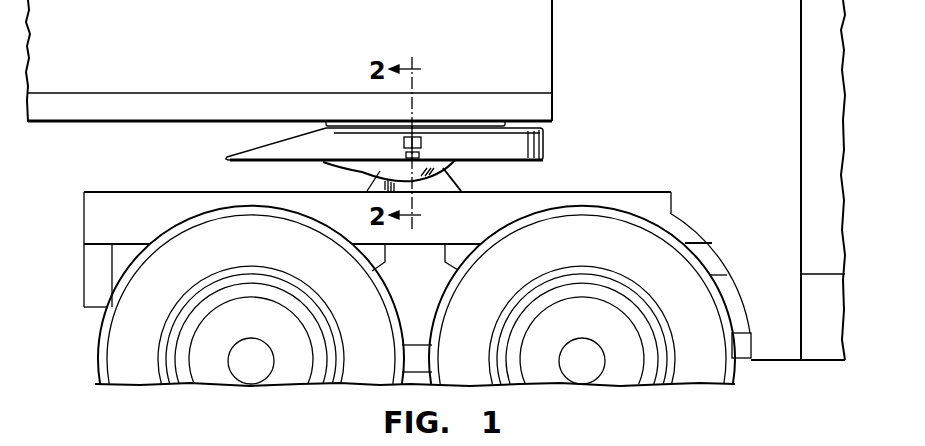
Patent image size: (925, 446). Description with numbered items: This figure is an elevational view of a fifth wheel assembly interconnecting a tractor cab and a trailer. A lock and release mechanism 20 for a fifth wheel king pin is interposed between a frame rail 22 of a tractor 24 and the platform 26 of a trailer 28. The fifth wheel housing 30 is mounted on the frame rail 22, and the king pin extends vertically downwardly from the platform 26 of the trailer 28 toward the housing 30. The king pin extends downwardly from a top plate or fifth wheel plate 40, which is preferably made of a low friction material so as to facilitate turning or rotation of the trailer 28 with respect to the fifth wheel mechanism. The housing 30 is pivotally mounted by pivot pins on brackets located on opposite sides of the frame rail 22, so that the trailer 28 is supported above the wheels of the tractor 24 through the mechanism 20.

The lock and release mechanism 20 is at (564, 172).
The frame rail 22 is at (117, 203).
The tractor 24 is at (683, 47).
The platform 26 is at (552, 100).
The trailer 28 is at (542, 13).
The fifth wheel housing 30 is at (266, 146).
The fifth wheel plate 40 is at (494, 122).